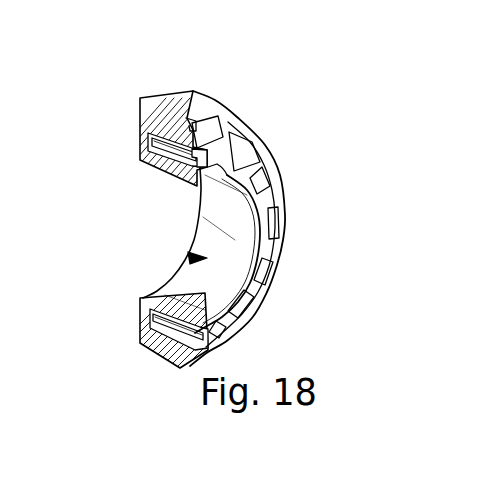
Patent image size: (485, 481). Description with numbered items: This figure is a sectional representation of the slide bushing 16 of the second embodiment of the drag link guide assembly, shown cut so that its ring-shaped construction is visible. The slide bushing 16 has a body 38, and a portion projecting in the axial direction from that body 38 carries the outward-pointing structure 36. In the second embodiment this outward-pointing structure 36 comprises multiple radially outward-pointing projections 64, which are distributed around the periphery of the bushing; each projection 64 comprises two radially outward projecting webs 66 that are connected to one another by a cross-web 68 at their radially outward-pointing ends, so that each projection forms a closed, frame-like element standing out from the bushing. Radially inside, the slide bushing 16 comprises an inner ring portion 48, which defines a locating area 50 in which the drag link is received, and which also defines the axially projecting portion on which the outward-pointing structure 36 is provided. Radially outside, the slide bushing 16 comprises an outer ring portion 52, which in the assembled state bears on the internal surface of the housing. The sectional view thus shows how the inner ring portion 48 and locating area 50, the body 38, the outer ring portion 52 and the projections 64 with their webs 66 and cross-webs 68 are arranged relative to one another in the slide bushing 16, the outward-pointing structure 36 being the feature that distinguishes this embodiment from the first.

The slide bushing 16 is at (103, 117).
The outward-pointing structure 36 is at (148, 140).
The body 38 is at (166, 160).
The inner ring portion 48 is at (180, 272).
The locating area 50 is at (188, 258).
The outer ring portion 52 is at (153, 322).
The radially outward-pointing projections 64 is at (283, 170).
The radially outward projecting webs 66 is at (216, 157).
The cross-web 68 is at (192, 122).